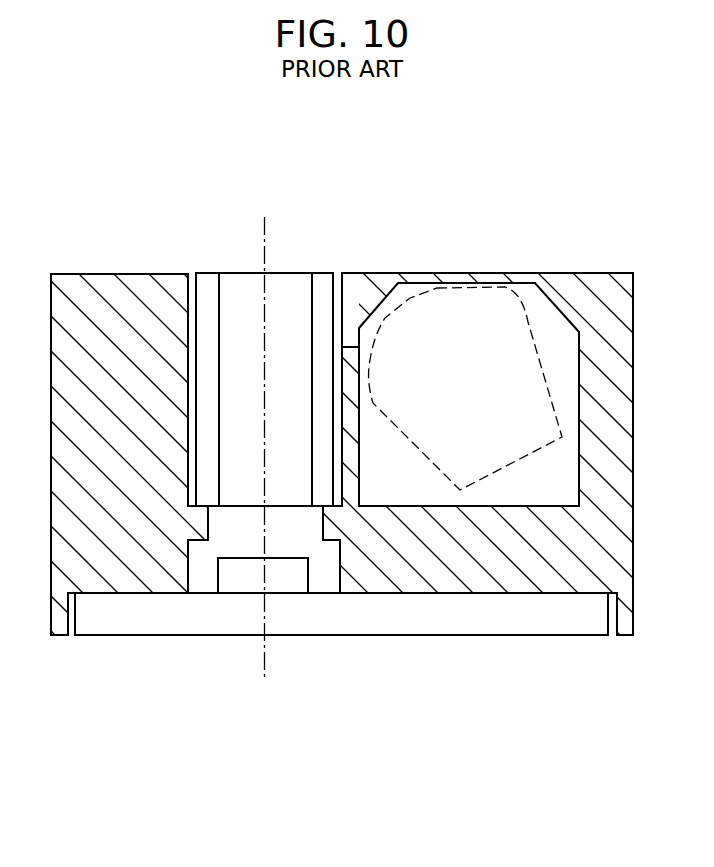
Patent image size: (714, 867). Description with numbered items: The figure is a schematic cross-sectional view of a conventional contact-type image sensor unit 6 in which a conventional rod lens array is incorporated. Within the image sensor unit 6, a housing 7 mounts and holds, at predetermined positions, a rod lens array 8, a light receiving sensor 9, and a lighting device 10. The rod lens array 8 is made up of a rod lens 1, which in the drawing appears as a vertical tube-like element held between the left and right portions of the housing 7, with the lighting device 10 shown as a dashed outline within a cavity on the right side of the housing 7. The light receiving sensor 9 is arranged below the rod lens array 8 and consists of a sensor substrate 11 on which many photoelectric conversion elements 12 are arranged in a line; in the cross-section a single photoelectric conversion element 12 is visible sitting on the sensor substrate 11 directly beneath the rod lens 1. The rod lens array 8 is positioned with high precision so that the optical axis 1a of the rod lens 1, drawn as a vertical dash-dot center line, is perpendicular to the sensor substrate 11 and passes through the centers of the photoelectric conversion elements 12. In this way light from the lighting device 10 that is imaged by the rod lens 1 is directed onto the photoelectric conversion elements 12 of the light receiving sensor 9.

The rod lens 1 is at (264, 341).
The optical axis 1a is at (265, 230).
The contact-type image sensor unit 6 is at (457, 225).
The housing 7 is at (103, 273).
The rod lens array 8 is at (240, 272).
The light receiving sensor 9 is at (341, 666).
The lighting device 10 is at (512, 283).
The sensor substrate 11 is at (405, 623).
The photoelectric conversion elements 12 is at (282, 583).